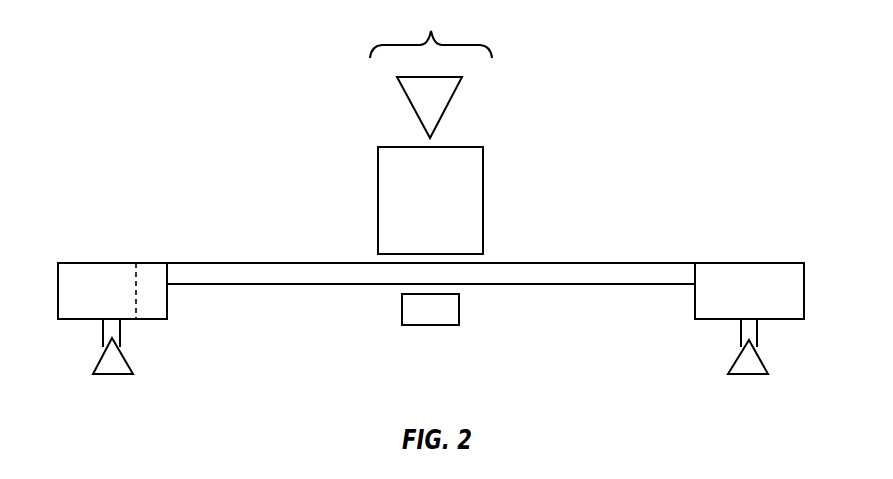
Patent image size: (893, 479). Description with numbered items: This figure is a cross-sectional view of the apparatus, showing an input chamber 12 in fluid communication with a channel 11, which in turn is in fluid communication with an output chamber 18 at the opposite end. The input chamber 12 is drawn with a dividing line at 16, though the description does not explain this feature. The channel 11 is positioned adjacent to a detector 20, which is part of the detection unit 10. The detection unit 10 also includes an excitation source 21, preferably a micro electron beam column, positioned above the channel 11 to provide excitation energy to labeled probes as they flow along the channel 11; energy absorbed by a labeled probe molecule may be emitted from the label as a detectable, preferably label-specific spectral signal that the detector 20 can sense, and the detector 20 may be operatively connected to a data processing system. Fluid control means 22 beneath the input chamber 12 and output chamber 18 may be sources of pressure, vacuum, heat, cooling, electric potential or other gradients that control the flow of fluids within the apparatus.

The detection unit 10 is at (431, 31).
The channel 11 is at (230, 263).
The input chamber 12 is at (76, 263).
The partition 16 is at (152, 263).
The output chamber 18 is at (755, 263).
The detector 20 is at (430, 317).
The excitation source 21 is at (450, 97).
The fluid control means 22 is at (118, 373).